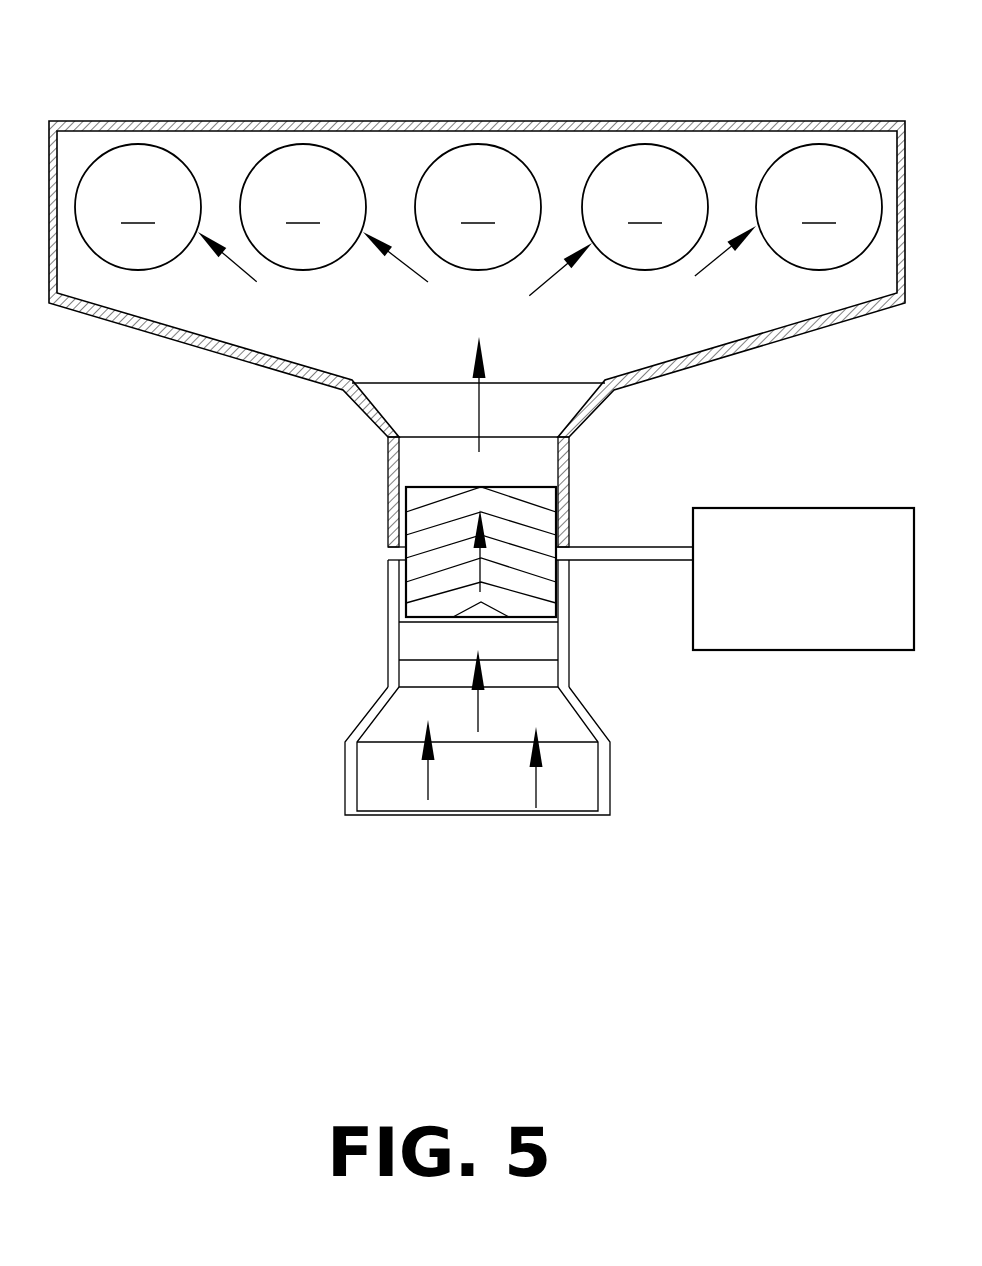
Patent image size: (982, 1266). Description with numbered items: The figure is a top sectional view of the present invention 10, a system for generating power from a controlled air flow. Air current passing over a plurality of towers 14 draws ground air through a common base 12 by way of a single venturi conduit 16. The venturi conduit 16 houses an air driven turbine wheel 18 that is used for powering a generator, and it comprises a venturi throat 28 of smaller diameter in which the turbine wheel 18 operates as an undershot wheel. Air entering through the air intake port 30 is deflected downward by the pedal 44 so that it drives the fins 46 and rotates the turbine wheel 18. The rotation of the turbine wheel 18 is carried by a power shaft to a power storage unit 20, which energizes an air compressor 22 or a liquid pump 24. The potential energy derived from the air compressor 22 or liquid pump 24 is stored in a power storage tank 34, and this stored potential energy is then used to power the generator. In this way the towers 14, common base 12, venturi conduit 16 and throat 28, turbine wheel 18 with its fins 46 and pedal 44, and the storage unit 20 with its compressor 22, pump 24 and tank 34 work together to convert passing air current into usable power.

The present invention 10 is at (766, 110).
The common base 12 is at (465, 121).
The towers 14 is at (478, 222).
The venturi conduit 16 is at (387, 442).
The turbine wheel 18 is at (553, 597).
The power storage unit 20 is at (772, 507).
The air compressor 22 is at (738, 652).
The liquid pump 24 is at (798, 652).
The venturi throat 28 is at (478, 470).
The air intake port 30 is at (613, 752).
The power storage tank 34 is at (868, 652).
The pedal 44 is at (418, 642).
The fins 46 is at (433, 507).